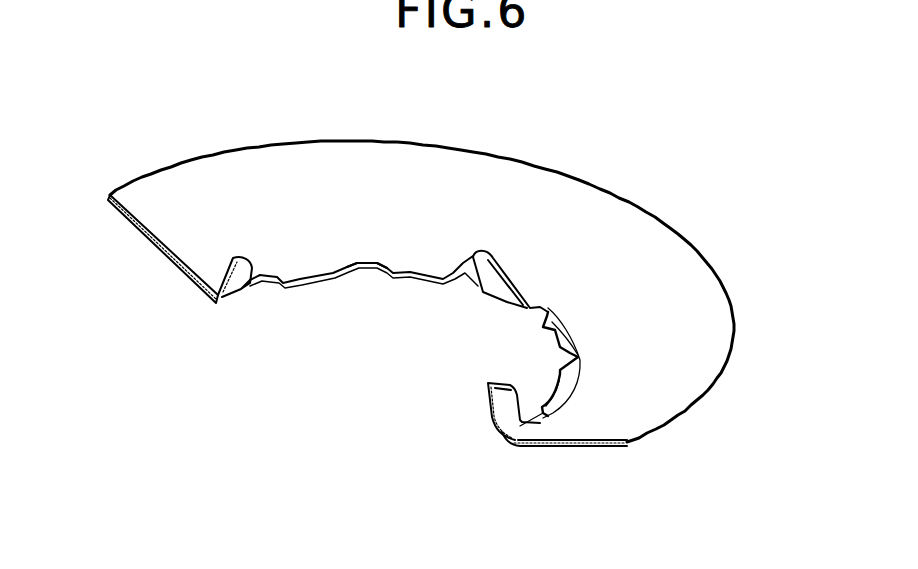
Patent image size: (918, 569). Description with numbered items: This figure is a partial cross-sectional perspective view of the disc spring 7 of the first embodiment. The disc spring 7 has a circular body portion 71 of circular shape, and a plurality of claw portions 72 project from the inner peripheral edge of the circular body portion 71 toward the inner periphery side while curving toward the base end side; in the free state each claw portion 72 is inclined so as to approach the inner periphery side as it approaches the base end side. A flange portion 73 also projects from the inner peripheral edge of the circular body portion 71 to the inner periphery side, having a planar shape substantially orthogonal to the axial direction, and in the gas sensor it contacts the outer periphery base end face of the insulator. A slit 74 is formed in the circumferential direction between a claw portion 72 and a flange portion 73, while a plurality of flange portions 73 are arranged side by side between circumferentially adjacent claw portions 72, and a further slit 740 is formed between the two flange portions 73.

The disc spring 7 is at (548, 122).
The circular body portion 71 is at (653, 280).
The claw portion 72 is at (490, 272).
The flange portion 73 is at (567, 337).
The slit 74 is at (552, 303).
The slit 740 is at (367, 263).